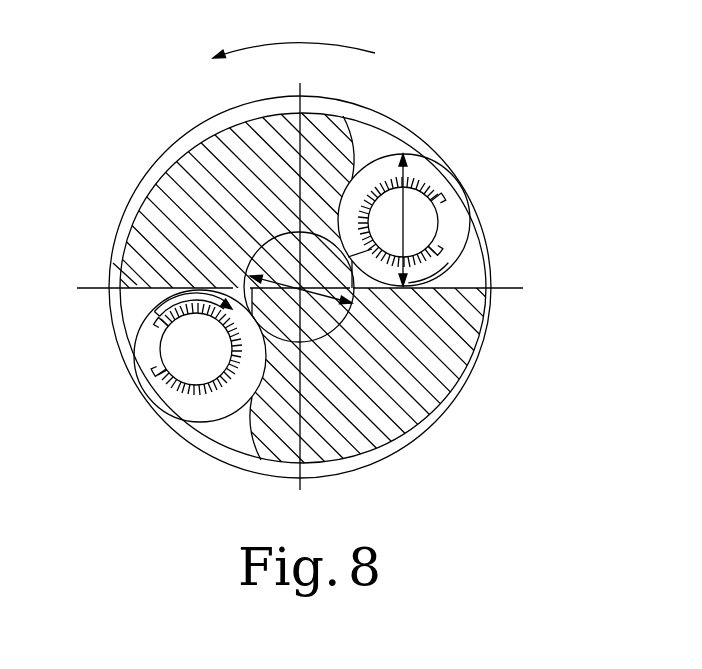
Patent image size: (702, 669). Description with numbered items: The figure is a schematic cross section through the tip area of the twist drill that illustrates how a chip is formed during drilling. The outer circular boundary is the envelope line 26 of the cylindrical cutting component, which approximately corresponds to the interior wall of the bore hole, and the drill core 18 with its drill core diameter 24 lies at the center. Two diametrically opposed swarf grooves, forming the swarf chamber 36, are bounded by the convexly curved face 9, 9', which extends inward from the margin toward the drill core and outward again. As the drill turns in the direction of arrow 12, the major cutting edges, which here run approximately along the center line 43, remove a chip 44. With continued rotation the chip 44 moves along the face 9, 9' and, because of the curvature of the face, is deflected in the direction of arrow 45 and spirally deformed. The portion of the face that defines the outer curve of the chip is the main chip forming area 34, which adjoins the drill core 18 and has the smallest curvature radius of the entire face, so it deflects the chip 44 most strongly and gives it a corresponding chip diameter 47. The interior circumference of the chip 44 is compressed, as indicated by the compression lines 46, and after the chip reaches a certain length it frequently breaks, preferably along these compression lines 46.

The arrow 12 is at (312, 42).
The drill core 18 is at (318, 315).
The drill core diameter 24 is at (252, 264).
The envelope line 26 is at (112, 327).
The face 9 is at (446, 273).
The face 9' is at (151, 310).
The center line 43 is at (508, 289).
The chip 44 is at (423, 167).
The main chip forming area 34 is at (372, 247).
The compression lines 46 is at (440, 183).
The swarf chamber 36 is at (435, 222).
The arrow 45 is at (190, 306).
The chip diameter 47 is at (407, 212).